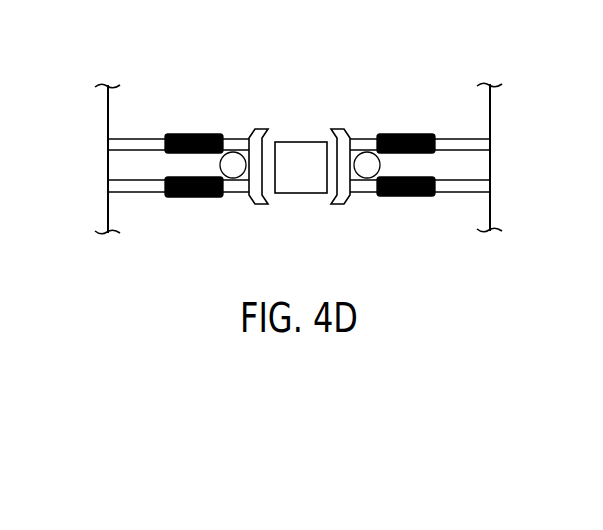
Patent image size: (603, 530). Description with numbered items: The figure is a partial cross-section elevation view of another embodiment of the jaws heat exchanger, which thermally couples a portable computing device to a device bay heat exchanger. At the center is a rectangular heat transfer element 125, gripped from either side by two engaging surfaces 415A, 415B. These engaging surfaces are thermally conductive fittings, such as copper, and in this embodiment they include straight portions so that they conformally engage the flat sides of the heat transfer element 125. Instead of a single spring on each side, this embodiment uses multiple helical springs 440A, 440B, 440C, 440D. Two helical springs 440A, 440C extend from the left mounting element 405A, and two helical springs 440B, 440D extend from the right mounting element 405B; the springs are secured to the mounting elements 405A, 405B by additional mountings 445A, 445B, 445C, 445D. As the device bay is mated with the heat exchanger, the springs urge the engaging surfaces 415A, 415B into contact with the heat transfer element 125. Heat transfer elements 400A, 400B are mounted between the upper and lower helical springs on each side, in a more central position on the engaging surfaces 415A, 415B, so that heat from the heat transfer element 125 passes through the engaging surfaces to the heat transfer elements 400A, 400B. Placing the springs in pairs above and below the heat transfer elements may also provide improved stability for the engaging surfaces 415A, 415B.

The heat transfer element 125 is at (292, 200).
The heat transfer element 400A is at (212, 165).
The heat transfer element 400B is at (382, 162).
The mounting element 405A is at (92, 113).
The mounting element 405B is at (502, 138).
The engaging surface 415A is at (261, 127).
The engaging surface 415B is at (337, 126).
The helical spring 440A is at (172, 131).
The helical spring 440B is at (414, 130).
The helical spring 440C is at (195, 205).
The helical spring 440D is at (397, 203).
The mounting 445A is at (140, 134).
The mounting 445B is at (482, 127).
The mounting 445C is at (127, 199).
The mounting 445D is at (472, 197).